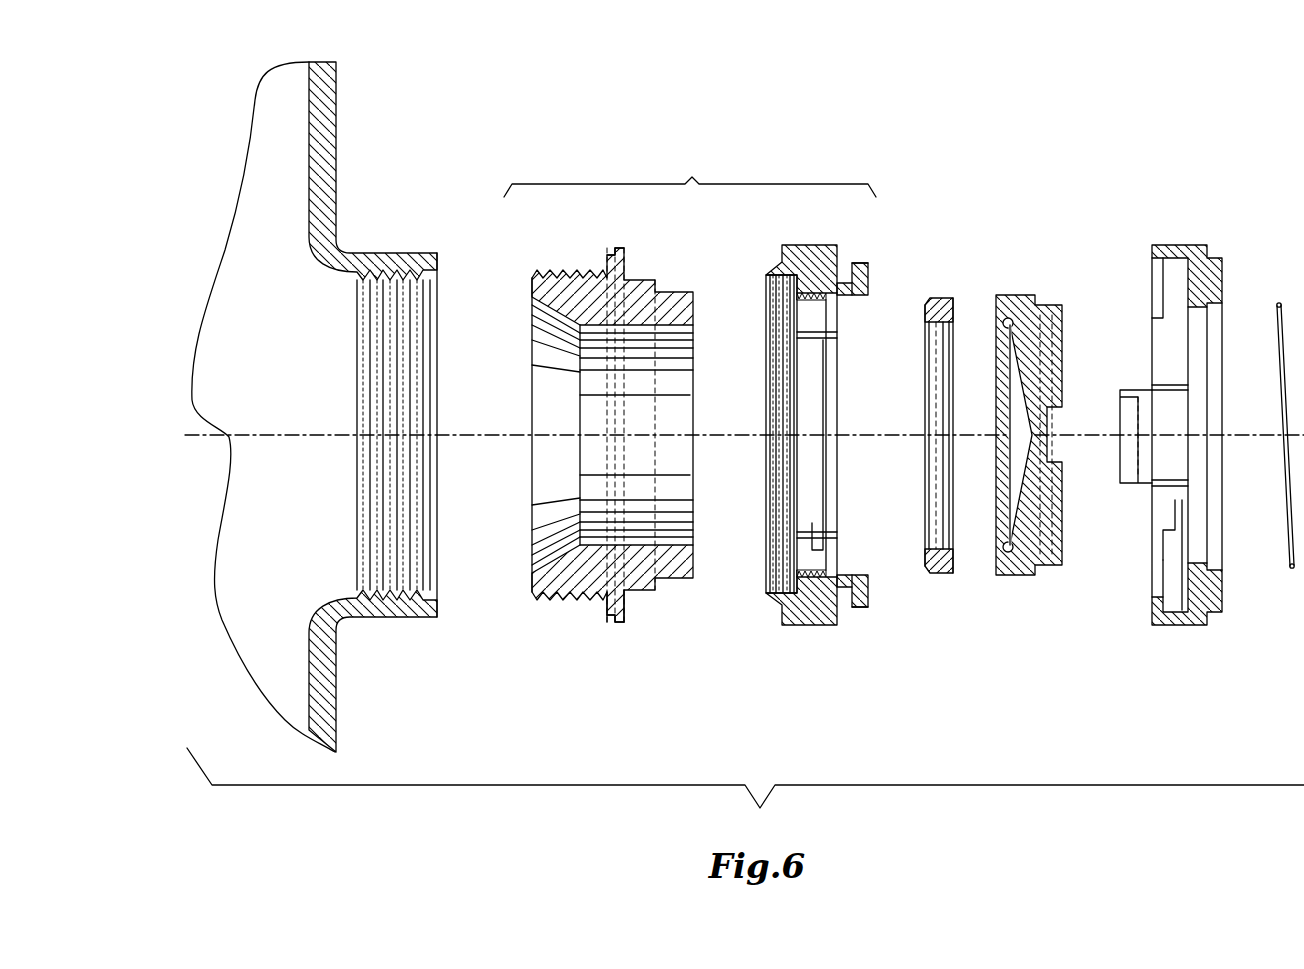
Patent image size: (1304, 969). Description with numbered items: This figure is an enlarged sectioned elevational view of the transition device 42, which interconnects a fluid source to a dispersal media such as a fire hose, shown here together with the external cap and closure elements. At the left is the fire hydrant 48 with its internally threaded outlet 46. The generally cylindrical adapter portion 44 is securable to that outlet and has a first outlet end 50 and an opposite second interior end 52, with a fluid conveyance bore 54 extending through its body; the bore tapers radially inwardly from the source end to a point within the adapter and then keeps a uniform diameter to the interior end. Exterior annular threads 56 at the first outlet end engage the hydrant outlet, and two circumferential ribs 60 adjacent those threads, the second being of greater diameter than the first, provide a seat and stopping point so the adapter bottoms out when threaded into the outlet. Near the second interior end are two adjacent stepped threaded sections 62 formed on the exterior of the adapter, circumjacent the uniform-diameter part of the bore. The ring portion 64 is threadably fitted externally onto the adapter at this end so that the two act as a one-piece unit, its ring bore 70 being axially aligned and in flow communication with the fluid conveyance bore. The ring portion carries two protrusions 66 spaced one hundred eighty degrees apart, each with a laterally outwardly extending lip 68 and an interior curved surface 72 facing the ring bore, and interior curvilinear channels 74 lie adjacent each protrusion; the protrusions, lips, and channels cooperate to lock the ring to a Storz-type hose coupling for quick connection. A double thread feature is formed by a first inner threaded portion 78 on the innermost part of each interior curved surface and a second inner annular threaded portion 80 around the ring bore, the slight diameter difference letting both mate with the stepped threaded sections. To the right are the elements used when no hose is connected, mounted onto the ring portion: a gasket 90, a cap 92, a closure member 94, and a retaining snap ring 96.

The transition device 42 is at (690, 174).
The adapter portion 44 is at (604, 464).
The outlet 46 is at (403, 618).
The fire hydrant 48 is at (336, 120).
The first outlet end 50 is at (545, 562).
The second interior end 52 is at (673, 326).
The fluid conveyance bore 54 is at (547, 472).
The exterior annular threads 56 is at (563, 608).
The rib 60 is at (610, 620).
The stepped threaded sections 62 is at (636, 282).
The ring portion 64 is at (836, 470).
The protrusion 66 is at (860, 284).
The lip 68 is at (857, 262).
The ring bore 70 is at (813, 483).
The interior curved surface 72 is at (848, 297).
The interior curvilinear channel 74 is at (824, 412).
The first inner threaded portion 78 is at (812, 297).
The second inner annular threaded portion 80 is at (766, 540).
The gasket 90 is at (945, 573).
The cap 92 is at (1030, 575).
The closure member 94 is at (1180, 625).
The snap ring 96 is at (1290, 550).